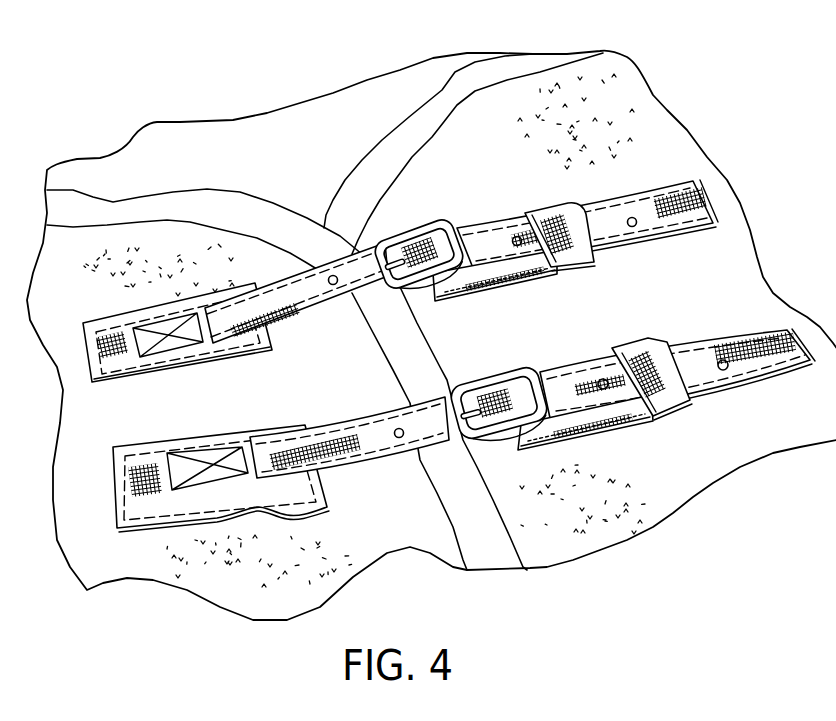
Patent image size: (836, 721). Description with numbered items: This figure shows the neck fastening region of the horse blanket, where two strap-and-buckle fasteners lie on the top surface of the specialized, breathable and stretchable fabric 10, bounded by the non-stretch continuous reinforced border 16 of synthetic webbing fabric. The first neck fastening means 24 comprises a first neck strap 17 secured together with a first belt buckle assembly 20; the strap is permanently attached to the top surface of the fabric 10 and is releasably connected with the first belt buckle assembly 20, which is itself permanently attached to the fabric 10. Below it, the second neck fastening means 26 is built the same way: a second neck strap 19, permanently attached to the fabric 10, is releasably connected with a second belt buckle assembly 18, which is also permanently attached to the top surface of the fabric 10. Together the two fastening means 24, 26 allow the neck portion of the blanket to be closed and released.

The specialized, breathable and stretchable fabric 10 is at (633, 92).
The continuous reinforced border 16 is at (560, 62).
The first neck strap 17 is at (310, 278).
The second belt buckle assembly 18 is at (567, 375).
The second neck strap 19 is at (410, 440).
The first belt buckle assembly 20 is at (512, 237).
The first neck fastening means 24 is at (358, 278).
The second neck fastening means 26 is at (443, 430).